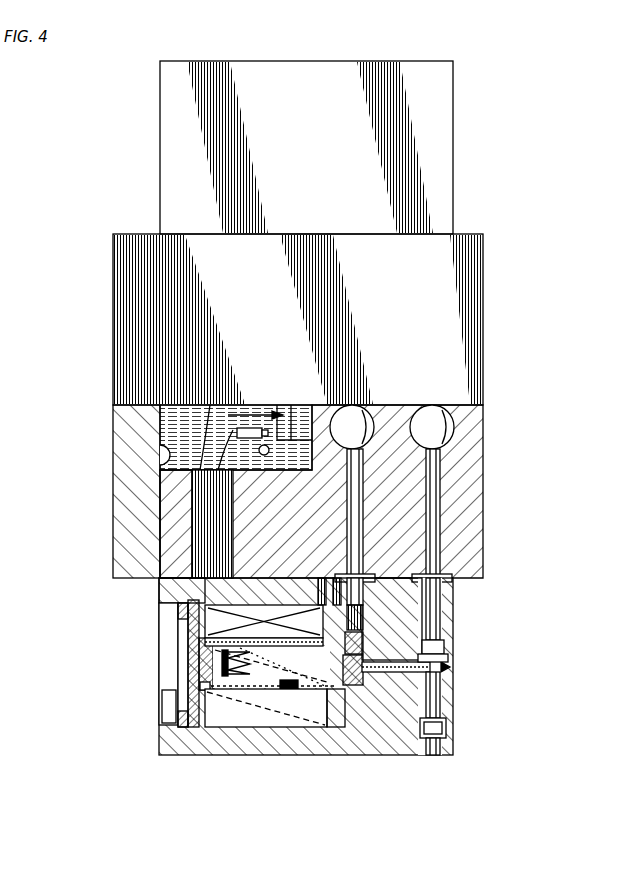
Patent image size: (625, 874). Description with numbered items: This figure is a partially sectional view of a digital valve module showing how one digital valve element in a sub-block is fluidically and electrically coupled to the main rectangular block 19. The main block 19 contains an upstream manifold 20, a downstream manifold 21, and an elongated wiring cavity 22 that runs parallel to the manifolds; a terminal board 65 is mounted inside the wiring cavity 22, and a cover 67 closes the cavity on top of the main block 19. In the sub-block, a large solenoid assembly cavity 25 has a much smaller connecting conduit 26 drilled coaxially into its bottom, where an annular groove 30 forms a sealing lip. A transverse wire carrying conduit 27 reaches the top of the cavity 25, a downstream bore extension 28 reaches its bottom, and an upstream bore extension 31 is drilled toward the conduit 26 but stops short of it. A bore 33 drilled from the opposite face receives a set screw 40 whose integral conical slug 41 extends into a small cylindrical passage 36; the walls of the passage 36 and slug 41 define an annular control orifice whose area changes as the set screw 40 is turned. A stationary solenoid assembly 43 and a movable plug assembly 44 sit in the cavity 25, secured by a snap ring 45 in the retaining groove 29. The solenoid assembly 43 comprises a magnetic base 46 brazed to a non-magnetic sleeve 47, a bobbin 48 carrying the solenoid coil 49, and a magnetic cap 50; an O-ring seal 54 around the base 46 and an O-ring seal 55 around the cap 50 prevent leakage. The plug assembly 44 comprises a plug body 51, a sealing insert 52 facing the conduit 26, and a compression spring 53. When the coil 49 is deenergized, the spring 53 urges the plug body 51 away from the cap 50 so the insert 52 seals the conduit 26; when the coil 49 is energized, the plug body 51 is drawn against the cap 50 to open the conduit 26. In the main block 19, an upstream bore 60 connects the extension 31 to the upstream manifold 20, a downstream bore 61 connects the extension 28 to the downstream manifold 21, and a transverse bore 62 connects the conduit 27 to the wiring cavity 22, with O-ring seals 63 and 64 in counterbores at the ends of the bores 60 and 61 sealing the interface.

The main rectangular block 19 is at (483, 469).
The upstream manifold 20 is at (439, 410).
The downstream manifold 21 is at (370, 412).
The wiring cavity 22 is at (178, 450).
The solenoid assembly cavity 25 is at (178, 618).
The connecting conduit 26 is at (393, 676).
The wire carrying conduit 27 is at (286, 621).
The downstream bore extension 28 is at (360, 594).
The snap ring retaining groove 29 is at (159, 752).
The annular groove 30 is at (442, 650).
The upstream bore extension 31 is at (436, 612).
The bore 33 is at (430, 758).
The cylindrical passage 36 is at (438, 640).
The set screw 40 is at (440, 730).
The conical slug 41 is at (450, 668).
The stationary solenoid assembly 43 is at (238, 750).
The movable plug assembly 44 is at (283, 745).
The snap ring 45 is at (188, 682).
The base 46 is at (340, 745).
The sleeve 47 is at (321, 620).
The bobbin 48 is at (193, 592).
The solenoid coil 49 is at (250, 757).
The cap 50 is at (197, 660).
The plug body 51 is at (292, 745).
The sealing insert 52 is at (320, 603).
The compression spring 53 is at (240, 668).
The O-ring seal 54 is at (340, 603).
The O-ring seal 55 is at (165, 706).
The upstream bore 60 is at (440, 512).
The downstream bore 61 is at (363, 487).
The transverse bore 62 is at (170, 523).
The O-ring seal 63 is at (440, 565).
The O-ring seal 64 is at (363, 552).
The terminal board 65 is at (180, 422).
The cover 67 is at (113, 505).